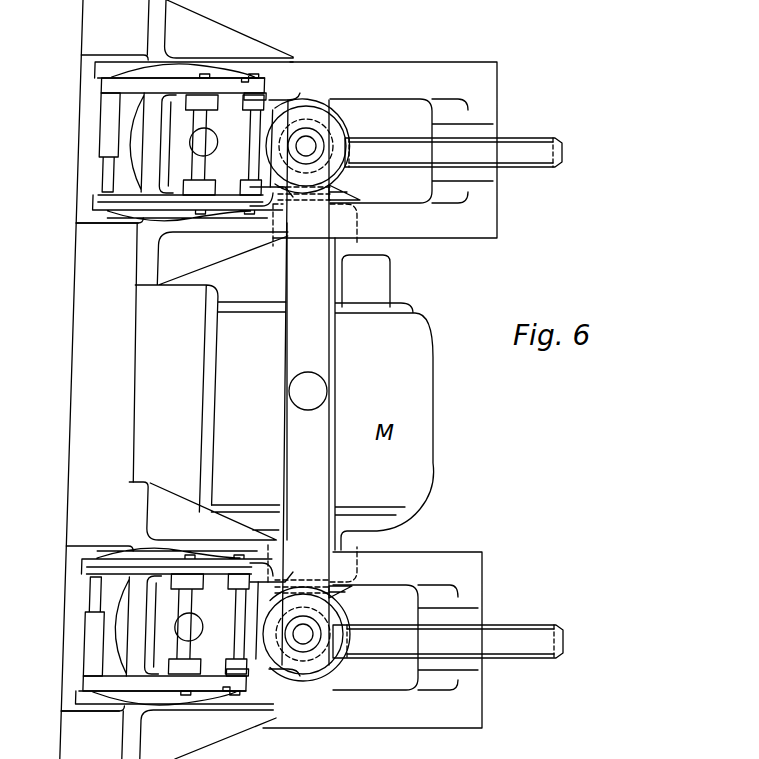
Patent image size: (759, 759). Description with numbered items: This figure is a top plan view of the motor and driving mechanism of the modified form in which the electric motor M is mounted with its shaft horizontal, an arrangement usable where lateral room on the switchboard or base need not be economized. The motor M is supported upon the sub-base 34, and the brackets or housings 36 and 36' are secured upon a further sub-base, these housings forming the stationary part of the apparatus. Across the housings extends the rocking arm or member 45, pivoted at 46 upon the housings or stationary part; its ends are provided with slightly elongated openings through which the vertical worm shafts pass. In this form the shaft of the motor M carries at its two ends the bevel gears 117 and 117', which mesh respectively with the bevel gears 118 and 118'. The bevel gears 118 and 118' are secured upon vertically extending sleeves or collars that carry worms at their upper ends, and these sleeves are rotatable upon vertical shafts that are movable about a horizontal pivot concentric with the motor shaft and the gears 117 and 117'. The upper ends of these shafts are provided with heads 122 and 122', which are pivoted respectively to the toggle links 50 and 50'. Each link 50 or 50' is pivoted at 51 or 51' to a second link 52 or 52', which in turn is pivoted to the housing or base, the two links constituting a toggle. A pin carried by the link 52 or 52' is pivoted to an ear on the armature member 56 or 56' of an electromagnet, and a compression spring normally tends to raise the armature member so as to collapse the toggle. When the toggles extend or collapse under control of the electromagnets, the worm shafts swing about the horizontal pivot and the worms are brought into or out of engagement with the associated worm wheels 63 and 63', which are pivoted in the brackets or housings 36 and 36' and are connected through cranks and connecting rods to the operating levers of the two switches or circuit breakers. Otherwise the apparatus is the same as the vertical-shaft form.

The sub-base 34 is at (121, 467).
The bracket or housing 36 is at (374, 491).
The bracket or housing 36' is at (385, 136).
The rocking arm or member 45 is at (312, 282).
The pivot 46 is at (313, 390).
The link 50 is at (281, 637).
The link 50' is at (296, 111).
The pivot 51 is at (231, 703).
The pivot 51' is at (277, 52).
The link 52 is at (163, 711).
The link 52' is at (185, 48).
The armature member 56 is at (69, 626).
The armature member 56' is at (87, 142).
The worm wheel 63 is at (456, 670).
The worm wheel 63' is at (453, 171).
The bevel gear 117 is at (365, 599).
The bevel gear 117' is at (371, 188).
The bevel gear 118 is at (327, 634).
The bevel gear 118' is at (340, 146).
The head 122 is at (335, 652).
The head 122' is at (342, 97).